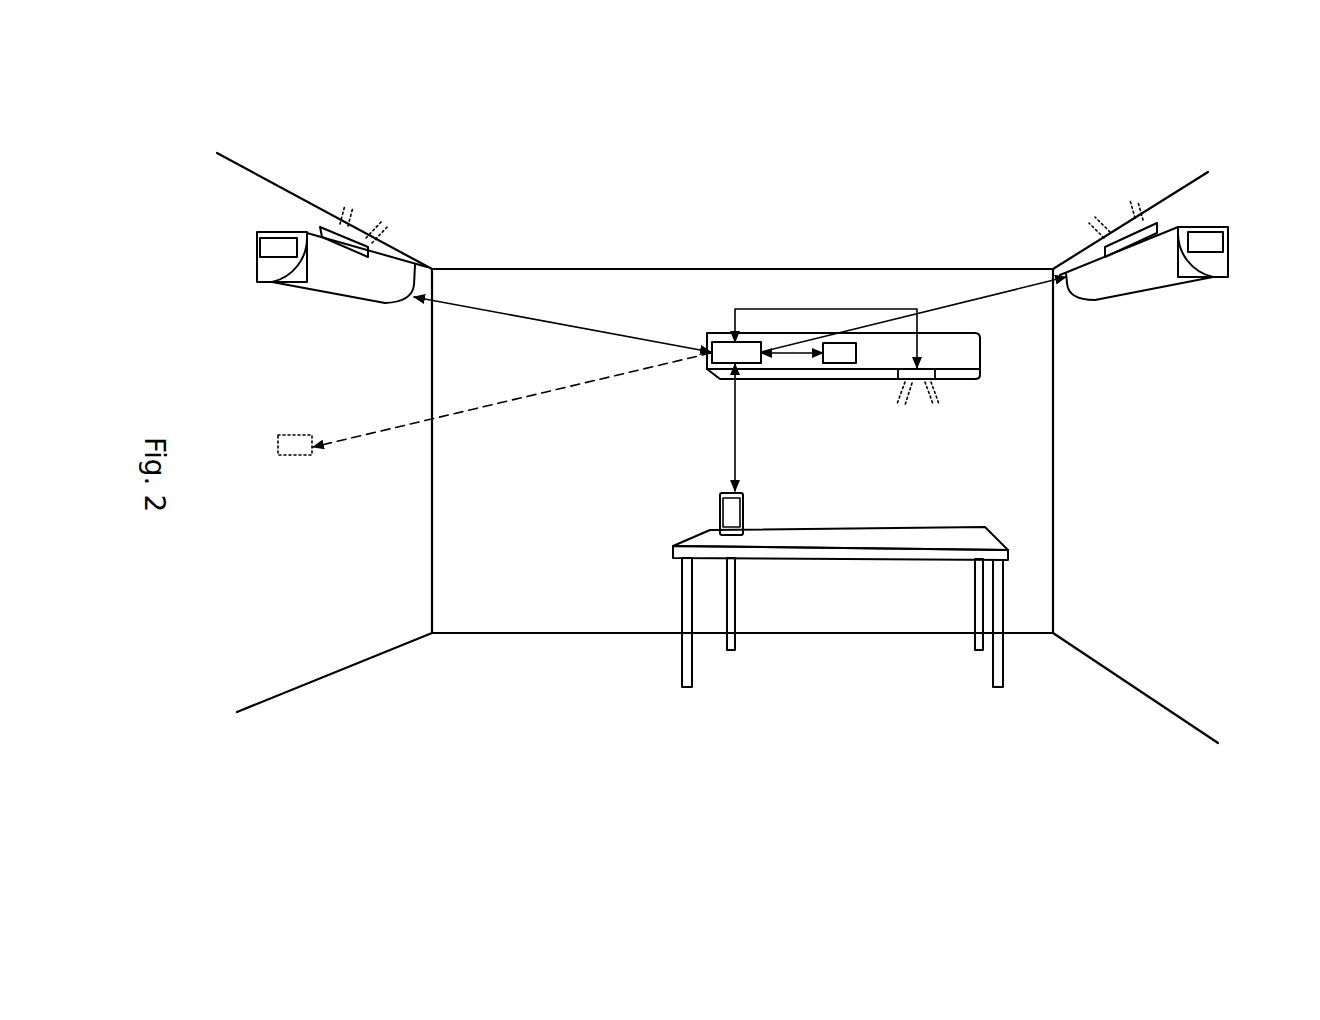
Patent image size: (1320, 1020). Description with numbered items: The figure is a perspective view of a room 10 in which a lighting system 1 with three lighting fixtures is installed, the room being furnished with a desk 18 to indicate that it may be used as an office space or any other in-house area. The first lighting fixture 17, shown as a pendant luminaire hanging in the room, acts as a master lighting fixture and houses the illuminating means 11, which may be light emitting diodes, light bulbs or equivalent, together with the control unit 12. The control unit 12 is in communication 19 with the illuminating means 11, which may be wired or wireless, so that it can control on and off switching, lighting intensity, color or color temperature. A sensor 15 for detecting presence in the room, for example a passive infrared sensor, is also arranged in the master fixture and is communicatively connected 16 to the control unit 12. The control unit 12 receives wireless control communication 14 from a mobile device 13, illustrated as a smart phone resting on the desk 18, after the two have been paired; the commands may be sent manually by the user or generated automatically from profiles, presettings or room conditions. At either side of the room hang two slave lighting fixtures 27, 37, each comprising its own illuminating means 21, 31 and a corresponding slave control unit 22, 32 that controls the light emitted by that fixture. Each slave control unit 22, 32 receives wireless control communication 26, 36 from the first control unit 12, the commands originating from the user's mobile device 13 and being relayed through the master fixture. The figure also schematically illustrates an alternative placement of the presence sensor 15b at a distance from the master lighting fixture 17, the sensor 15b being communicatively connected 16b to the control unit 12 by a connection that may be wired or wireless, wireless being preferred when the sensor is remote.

The lighting system 1 is at (674, 292).
The room 10 is at (452, 272).
The illuminating means 11 is at (917, 380).
The control unit 12 is at (727, 342).
The mobile device 13 is at (733, 535).
The wireless control communication 14 is at (733, 430).
The sensor 15 is at (840, 343).
The sensor 15b is at (298, 437).
The communicative connection 16 is at (790, 365).
The connection 16b is at (372, 432).
The first lighting fixture 17 is at (968, 350).
The desk 18 is at (985, 548).
The communication 19 is at (784, 309).
The illuminating means 21 is at (343, 230).
The slave control unit 22 is at (278, 238).
The wireless control communication 26 is at (562, 323).
The slave lighting fixture 27 is at (302, 282).
The illuminating means 31 is at (1153, 225).
The slave control unit 32 is at (1207, 233).
The wireless control communication 36 is at (960, 303).
The slave lighting fixture 37 is at (1177, 272).